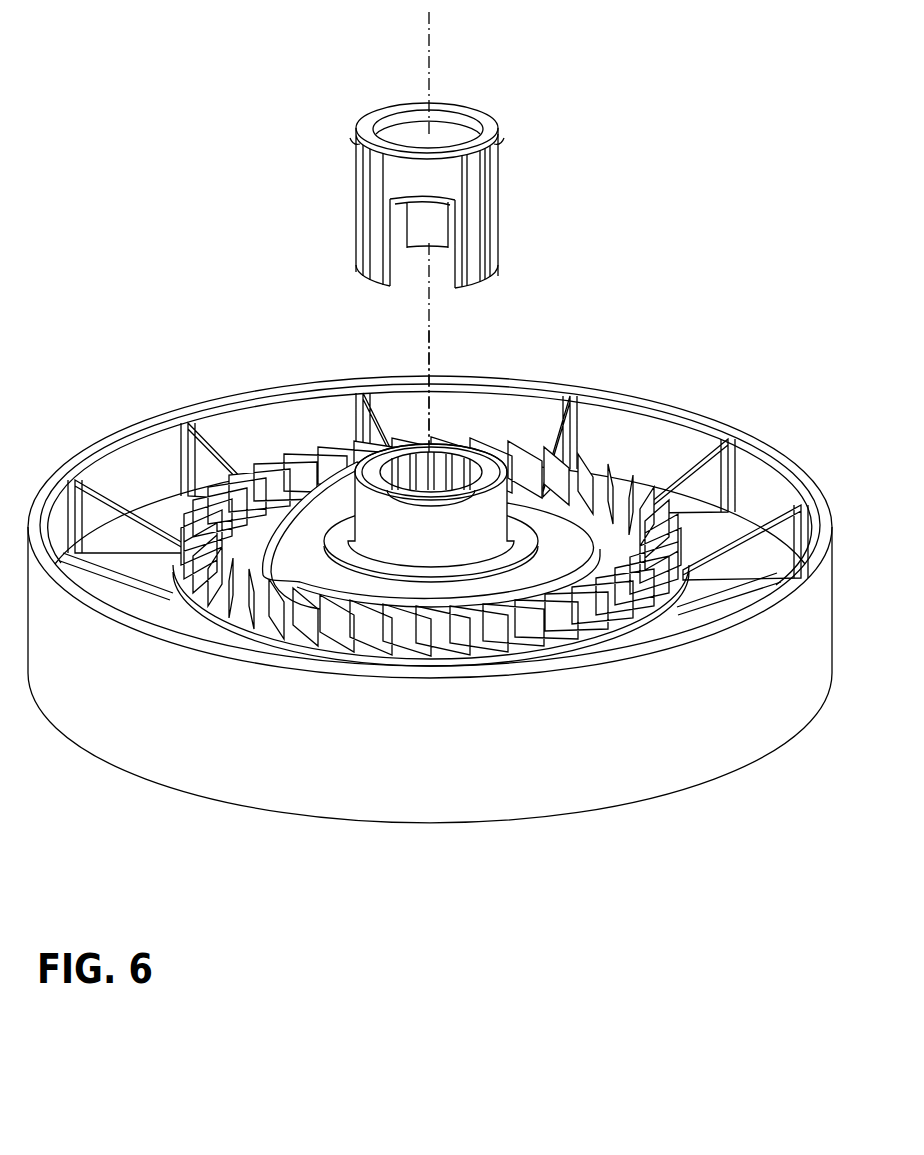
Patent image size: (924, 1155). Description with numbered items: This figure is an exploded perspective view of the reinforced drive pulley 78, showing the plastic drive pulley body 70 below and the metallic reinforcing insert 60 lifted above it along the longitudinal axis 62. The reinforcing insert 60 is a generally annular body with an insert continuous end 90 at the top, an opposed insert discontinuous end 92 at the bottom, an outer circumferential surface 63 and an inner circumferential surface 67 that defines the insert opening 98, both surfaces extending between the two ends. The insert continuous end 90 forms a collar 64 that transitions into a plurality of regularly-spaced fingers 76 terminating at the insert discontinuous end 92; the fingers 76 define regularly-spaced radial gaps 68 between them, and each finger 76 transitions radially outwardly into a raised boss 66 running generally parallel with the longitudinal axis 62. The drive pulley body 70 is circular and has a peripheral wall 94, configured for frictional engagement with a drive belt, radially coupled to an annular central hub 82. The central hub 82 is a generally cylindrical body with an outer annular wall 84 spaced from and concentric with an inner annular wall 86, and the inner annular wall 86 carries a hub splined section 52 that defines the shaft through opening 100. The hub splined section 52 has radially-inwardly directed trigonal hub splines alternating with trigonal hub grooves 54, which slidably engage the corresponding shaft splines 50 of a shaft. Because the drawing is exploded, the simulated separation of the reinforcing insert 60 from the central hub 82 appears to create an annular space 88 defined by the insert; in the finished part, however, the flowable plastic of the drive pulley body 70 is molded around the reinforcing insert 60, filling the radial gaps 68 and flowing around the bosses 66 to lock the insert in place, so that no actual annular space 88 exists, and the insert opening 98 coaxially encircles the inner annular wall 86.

The shaft splines 50 is at (440, 447).
The hub splined section 52 is at (373, 468).
The trigonal hub grooves 54 is at (413, 453).
The reinforcing insert 60 is at (527, 135).
The longitudinal axis 62 is at (428, 73).
The outer circumferential surface 63 is at (418, 177).
The collar 64 is at (362, 120).
The raised boss 66 is at (358, 198).
The inner circumferential surface 67 is at (455, 125).
The radial gaps 68 is at (418, 250).
The drive pulley body 70 is at (488, 765).
The fingers 76 is at (498, 212).
The reinforced drive pulley 78 is at (648, 378).
The central hub 82 is at (345, 535).
The outer annular wall 84 is at (402, 533).
The inner annular wall 86 is at (493, 487).
The annular space 88 is at (357, 458).
The insert continuous end 90 is at (497, 117).
The insert discontinuous end 92 is at (487, 287).
The peripheral wall 94 is at (82, 602).
The insert opening 98 is at (413, 128).
The shaft through opening 100 is at (440, 447).